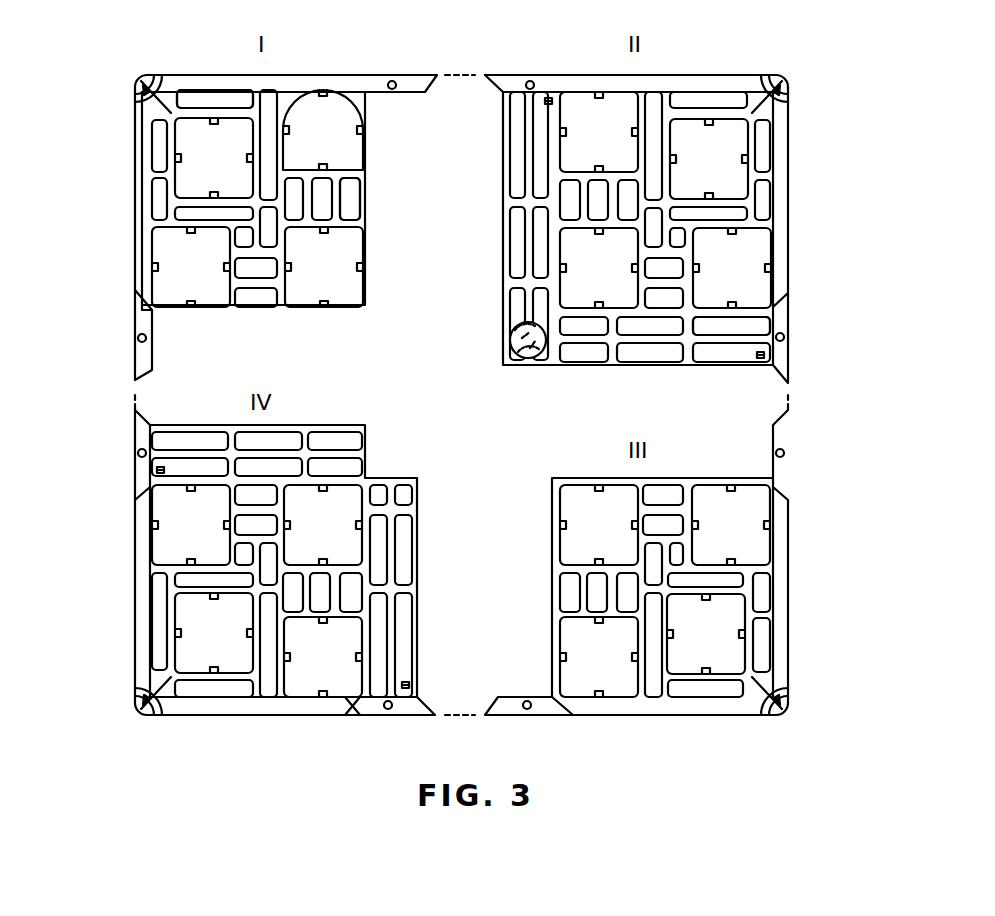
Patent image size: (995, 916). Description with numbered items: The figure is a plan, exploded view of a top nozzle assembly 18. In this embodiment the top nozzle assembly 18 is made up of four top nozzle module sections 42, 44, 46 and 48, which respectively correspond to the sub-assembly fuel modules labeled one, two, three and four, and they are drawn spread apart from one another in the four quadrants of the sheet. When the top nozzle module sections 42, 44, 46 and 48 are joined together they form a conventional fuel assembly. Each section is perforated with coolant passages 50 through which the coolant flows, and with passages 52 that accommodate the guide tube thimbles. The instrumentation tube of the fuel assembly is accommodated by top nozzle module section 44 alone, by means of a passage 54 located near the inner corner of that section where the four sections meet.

The top nozzle assembly 18 is at (740, 68).
The top nozzle module section 42 is at (268, 209).
The top nozzle module section 44 is at (654, 236).
The top nozzle module section 46 is at (778, 548).
The top nozzle module section 48 is at (150, 570).
The coolant passages 50 is at (565, 595).
The passages 52 is at (310, 115).
The passage 54 is at (522, 348).